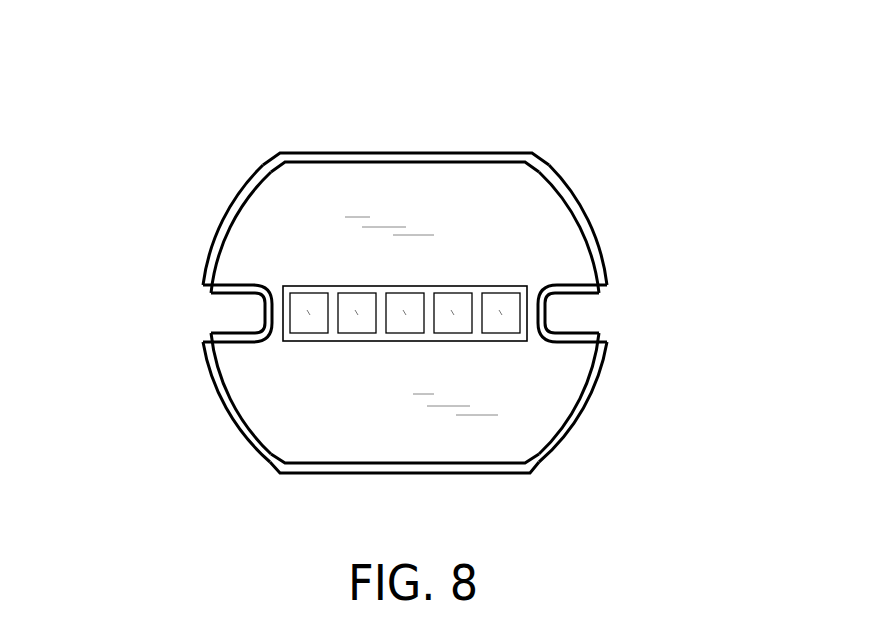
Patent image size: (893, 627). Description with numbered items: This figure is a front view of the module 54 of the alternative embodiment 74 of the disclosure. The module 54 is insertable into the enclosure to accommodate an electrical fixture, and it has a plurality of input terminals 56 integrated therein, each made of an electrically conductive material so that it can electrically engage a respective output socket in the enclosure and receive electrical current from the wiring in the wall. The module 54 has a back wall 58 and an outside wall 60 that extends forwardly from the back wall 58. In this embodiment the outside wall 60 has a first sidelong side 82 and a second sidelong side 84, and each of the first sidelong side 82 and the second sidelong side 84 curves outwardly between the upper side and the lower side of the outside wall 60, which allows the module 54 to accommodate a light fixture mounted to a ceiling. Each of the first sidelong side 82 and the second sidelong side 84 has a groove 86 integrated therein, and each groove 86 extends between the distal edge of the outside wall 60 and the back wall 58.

The alternative embodiment 74 is at (240, 132).
The module 54 is at (545, 170).
The input terminals 56 is at (405, 333).
The back wall 58 is at (507, 433).
The outside wall 60 is at (453, 155).
The first sidelong side 82 is at (220, 240).
The second sidelong side 84 is at (588, 237).
The groove 86 is at (215, 313).